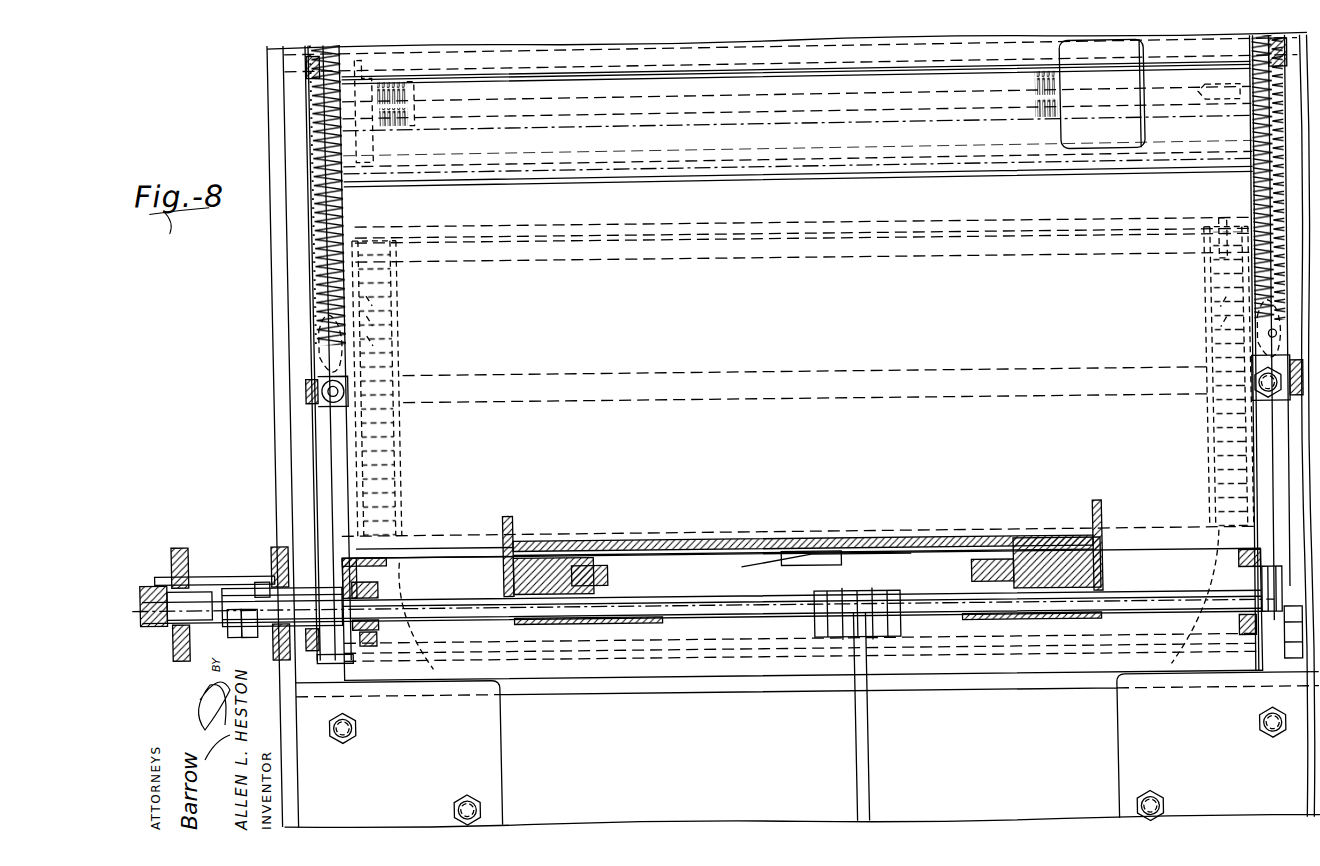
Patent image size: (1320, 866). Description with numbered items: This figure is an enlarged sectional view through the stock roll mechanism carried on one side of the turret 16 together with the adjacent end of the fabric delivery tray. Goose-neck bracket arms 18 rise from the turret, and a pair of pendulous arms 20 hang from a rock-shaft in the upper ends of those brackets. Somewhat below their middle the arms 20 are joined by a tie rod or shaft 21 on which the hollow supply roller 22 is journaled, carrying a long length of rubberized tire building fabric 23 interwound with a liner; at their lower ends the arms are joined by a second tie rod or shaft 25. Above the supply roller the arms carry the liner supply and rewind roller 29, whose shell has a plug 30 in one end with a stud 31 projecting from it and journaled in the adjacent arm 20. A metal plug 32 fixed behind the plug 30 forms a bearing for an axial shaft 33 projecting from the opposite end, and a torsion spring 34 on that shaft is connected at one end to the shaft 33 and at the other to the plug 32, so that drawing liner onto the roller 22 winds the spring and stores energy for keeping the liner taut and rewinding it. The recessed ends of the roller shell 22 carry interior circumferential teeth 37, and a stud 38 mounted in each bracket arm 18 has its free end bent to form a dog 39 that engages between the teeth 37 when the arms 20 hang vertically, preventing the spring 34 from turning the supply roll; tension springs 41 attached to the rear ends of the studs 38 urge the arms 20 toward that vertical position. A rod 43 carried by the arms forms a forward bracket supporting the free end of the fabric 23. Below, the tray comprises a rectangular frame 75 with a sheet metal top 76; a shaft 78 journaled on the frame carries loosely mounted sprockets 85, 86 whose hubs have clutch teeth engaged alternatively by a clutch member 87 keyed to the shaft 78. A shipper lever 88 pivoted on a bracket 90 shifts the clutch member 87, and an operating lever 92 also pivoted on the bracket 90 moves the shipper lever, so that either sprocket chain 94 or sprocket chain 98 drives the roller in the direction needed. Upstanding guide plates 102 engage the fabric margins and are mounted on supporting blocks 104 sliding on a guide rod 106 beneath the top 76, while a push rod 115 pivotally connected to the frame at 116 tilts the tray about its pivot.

The turntable or turret 16 is at (808, 751).
The bracket arms 18 is at (724, 432).
The pendulous arms 20 is at (756, 349).
The tie rod or shaft 21 is at (289, 233).
The supply roller 22 is at (804, 226).
The rubberized tire building fabric 23 is at (802, 521).
The tie rod or shaft 25 is at (340, 673).
The liner supply and rewind roller 29 is at (404, 146).
The plug 30 is at (1171, 170).
The stud 31 is at (1220, 141).
The metal plug 32 is at (1098, 121).
The axial shaft 33 is at (732, 162).
The torsion spring 34 is at (1030, 137).
The teeth 37 is at (803, 381).
The stud 38 is at (729, 410).
The dog 39 is at (803, 357).
The tension springs 41 is at (796, 172).
The rod 43 is at (792, 113).
The rectangular frame 75 is at (388, 568).
The sheet metal top 76 is at (801, 588).
The shaft 78 is at (175, 581).
The sprocket 85 is at (175, 584).
The sprocket 86 is at (268, 583).
The clutch member 87 is at (218, 630).
The shipper lever 88 is at (236, 635).
The bracket 90 is at (282, 622).
The operating lever 92 is at (214, 560).
The sprocket chain 94 is at (208, 526).
The sprocket chain 98 is at (254, 564).
The guide plates 102 is at (825, 530).
The supporting blocks 104 is at (832, 565).
The guide rod 106 is at (702, 593).
The push rod 115 is at (823, 717).
The pivotal connection 116 is at (825, 614).